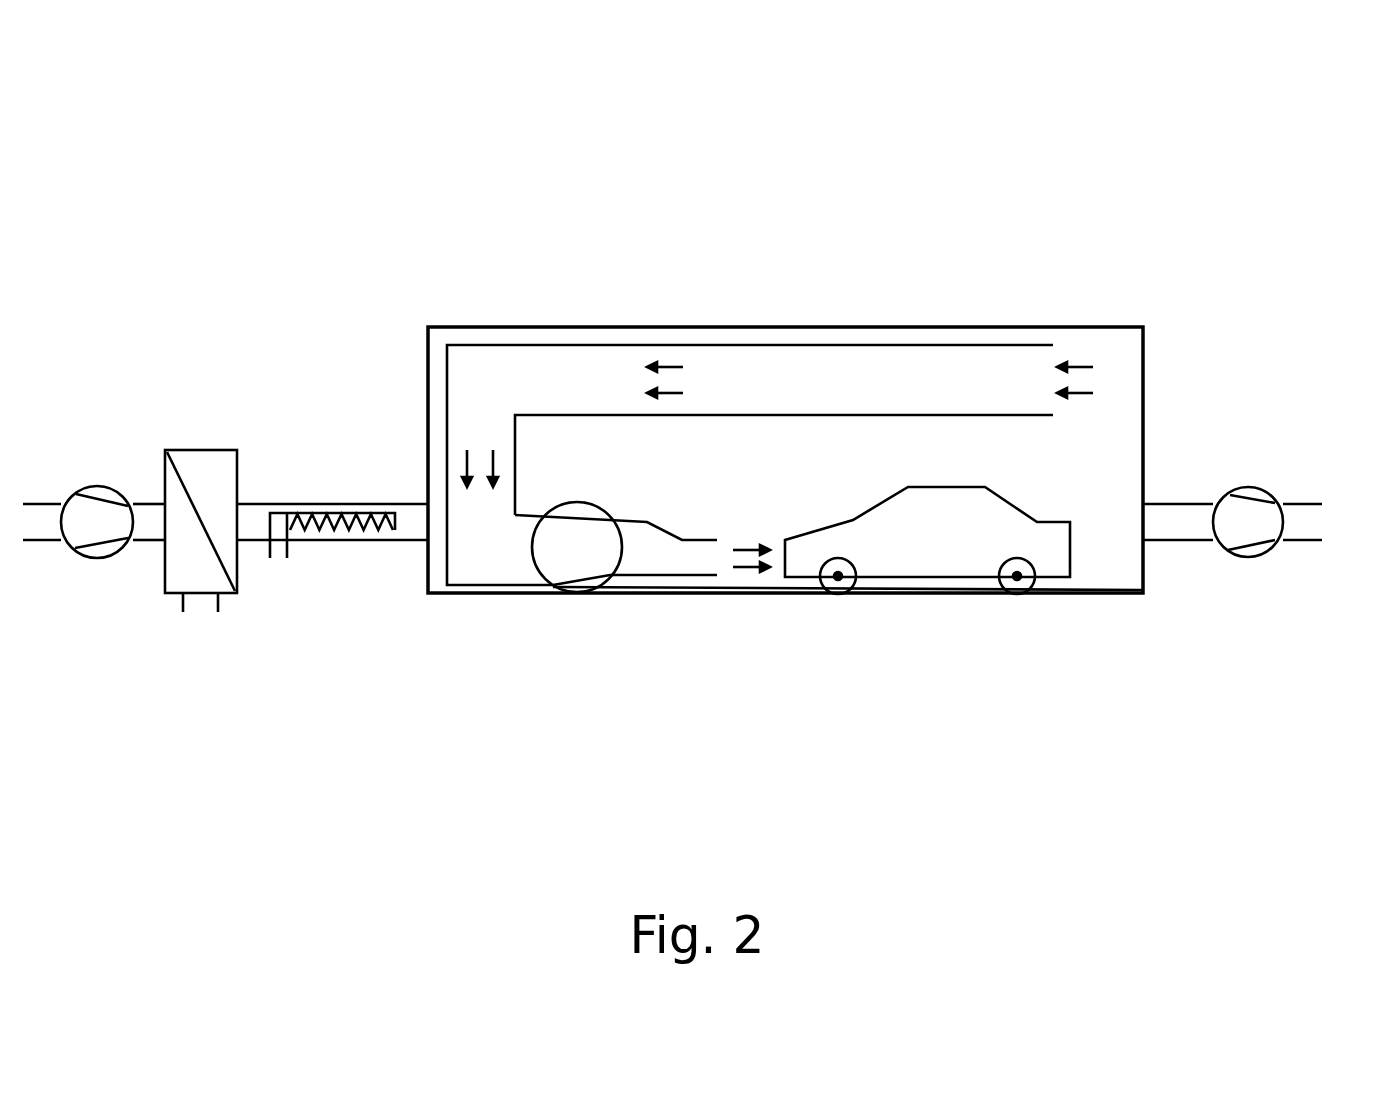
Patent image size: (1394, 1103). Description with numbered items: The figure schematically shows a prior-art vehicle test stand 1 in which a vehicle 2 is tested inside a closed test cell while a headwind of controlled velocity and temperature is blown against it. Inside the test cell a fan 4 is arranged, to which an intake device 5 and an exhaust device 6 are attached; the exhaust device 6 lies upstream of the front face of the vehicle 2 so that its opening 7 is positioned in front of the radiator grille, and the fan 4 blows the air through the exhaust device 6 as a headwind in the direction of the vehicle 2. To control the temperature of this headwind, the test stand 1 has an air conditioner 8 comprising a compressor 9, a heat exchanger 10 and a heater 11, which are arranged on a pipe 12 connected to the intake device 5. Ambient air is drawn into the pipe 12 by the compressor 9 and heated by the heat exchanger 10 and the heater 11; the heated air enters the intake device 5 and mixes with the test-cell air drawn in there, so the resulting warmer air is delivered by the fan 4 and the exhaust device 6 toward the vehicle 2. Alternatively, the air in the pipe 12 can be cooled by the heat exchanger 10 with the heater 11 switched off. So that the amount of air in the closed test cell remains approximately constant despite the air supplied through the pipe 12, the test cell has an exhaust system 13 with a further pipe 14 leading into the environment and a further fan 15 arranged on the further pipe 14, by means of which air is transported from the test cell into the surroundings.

The vehicle test stand 1 is at (1277, 93).
The vehicle 2 is at (952, 552).
The fan 4 is at (580, 552).
The intake device 5 is at (972, 382).
The exhaust device 6 is at (663, 553).
The opening 7 is at (712, 560).
The air conditioner 8 is at (162, 702).
The compressor 9 is at (97, 522).
The heat exchanger 10 is at (202, 462).
The heater 11 is at (332, 518).
The pipe 12 is at (342, 542).
The exhaust system 13 is at (1300, 740).
The further pipe 14 is at (1177, 527).
The further fan 15 is at (1253, 515).